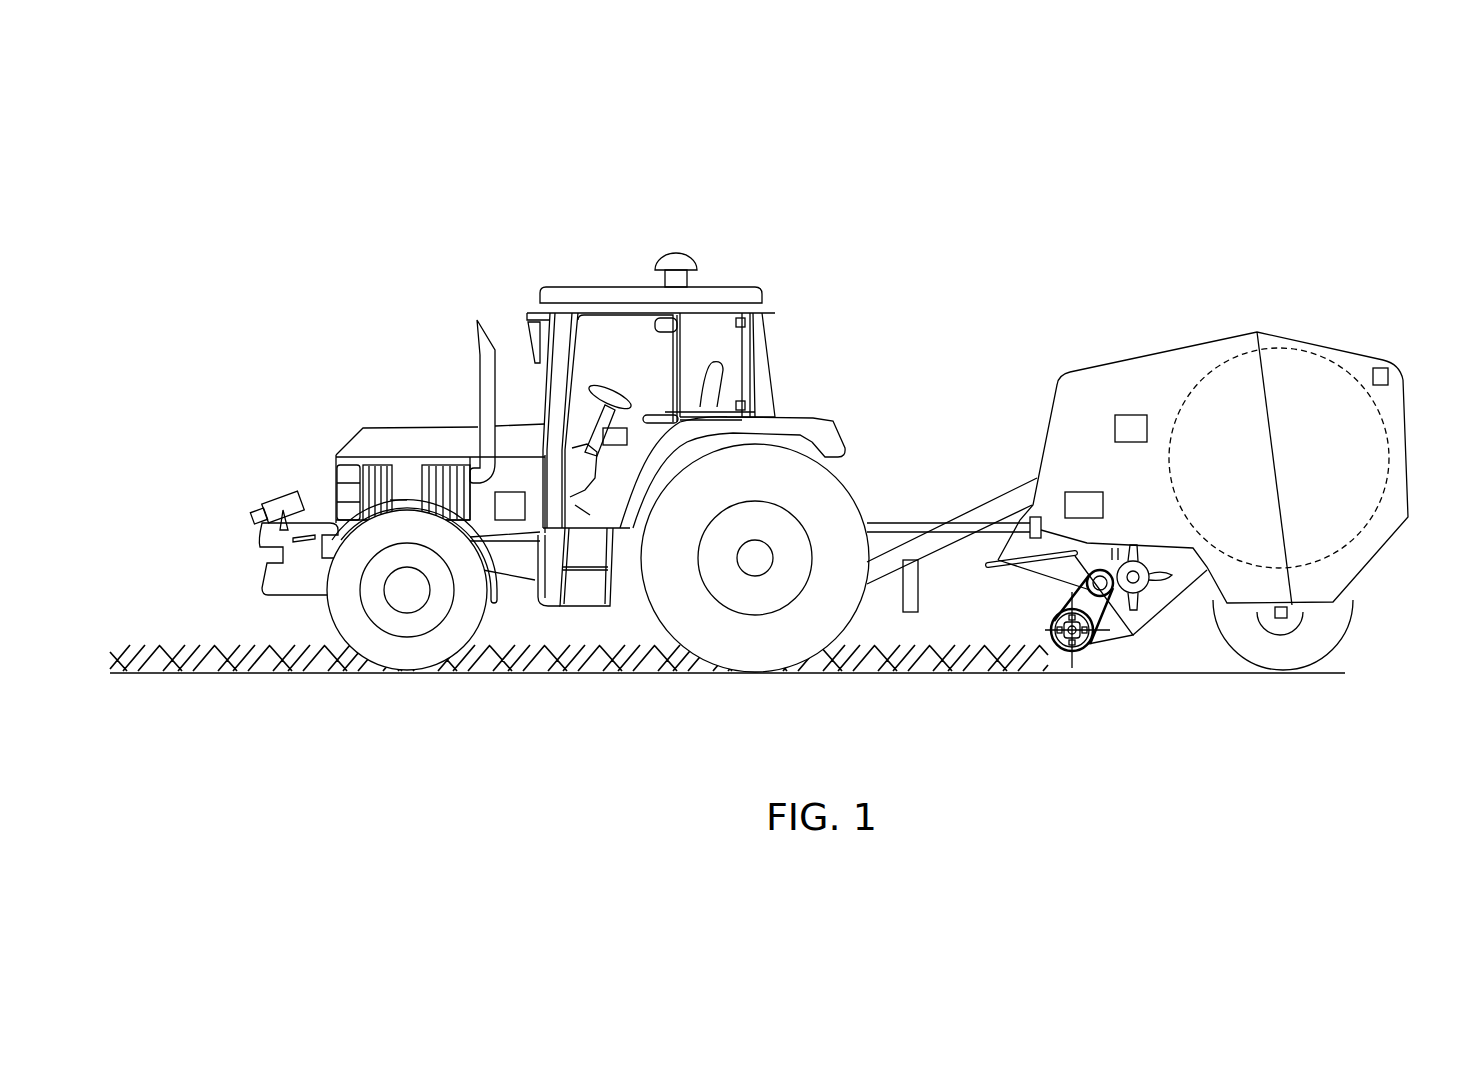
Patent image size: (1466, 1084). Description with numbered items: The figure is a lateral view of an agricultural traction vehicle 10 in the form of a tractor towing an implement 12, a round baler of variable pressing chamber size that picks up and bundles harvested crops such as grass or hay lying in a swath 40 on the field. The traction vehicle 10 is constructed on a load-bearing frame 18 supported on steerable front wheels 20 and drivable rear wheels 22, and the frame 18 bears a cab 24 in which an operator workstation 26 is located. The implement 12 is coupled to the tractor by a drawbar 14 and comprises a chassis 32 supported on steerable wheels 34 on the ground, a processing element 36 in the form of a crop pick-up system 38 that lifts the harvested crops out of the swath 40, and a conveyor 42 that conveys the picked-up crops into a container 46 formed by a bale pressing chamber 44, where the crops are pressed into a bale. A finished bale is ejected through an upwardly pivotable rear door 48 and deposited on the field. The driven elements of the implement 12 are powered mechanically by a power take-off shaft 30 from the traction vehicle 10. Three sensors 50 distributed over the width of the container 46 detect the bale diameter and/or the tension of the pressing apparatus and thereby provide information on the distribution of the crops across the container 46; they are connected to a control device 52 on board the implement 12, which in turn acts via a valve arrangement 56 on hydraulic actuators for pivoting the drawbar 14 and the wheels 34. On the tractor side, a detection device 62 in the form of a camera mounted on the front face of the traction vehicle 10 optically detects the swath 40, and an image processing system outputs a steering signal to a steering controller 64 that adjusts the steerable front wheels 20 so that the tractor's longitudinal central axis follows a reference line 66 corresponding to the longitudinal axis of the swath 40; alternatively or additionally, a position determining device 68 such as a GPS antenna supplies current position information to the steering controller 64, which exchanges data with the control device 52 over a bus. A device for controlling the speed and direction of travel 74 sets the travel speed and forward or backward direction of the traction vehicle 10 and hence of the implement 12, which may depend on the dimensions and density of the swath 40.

The agricultural traction vehicle 10 is at (572, 258).
The implement 12 is at (1147, 296).
The drawbar 14 is at (990, 508).
The load-bearing frame 18 is at (525, 555).
The steerable front wheels 20 is at (405, 653).
The drivable rear wheels 22 is at (757, 645).
The cab 24 is at (575, 340).
The operator workstation 26 is at (660, 393).
The power take-off shaft 30 is at (882, 527).
The chassis 32 is at (1282, 622).
The steerable wheels 34 is at (1328, 655).
The processing element 36 is at (1097, 646).
The crop pick-up system 38 is at (1078, 655).
The swath 40 is at (727, 696).
The conveyor 42 is at (1138, 606).
The bale pressing chamber 44 is at (1279, 421).
The container 46 is at (1298, 388).
The rear door 48 is at (1408, 425).
The sensors 50 is at (1385, 378).
The control device 52 is at (1082, 502).
The valve arrangement 56 is at (1130, 425).
The detection device 62 is at (280, 505).
The steering controller 64 is at (618, 440).
The reference line 66 is at (204, 655).
The position determining device 68 is at (680, 266).
The device for controlling the speed and direction of travel 74 is at (510, 502).